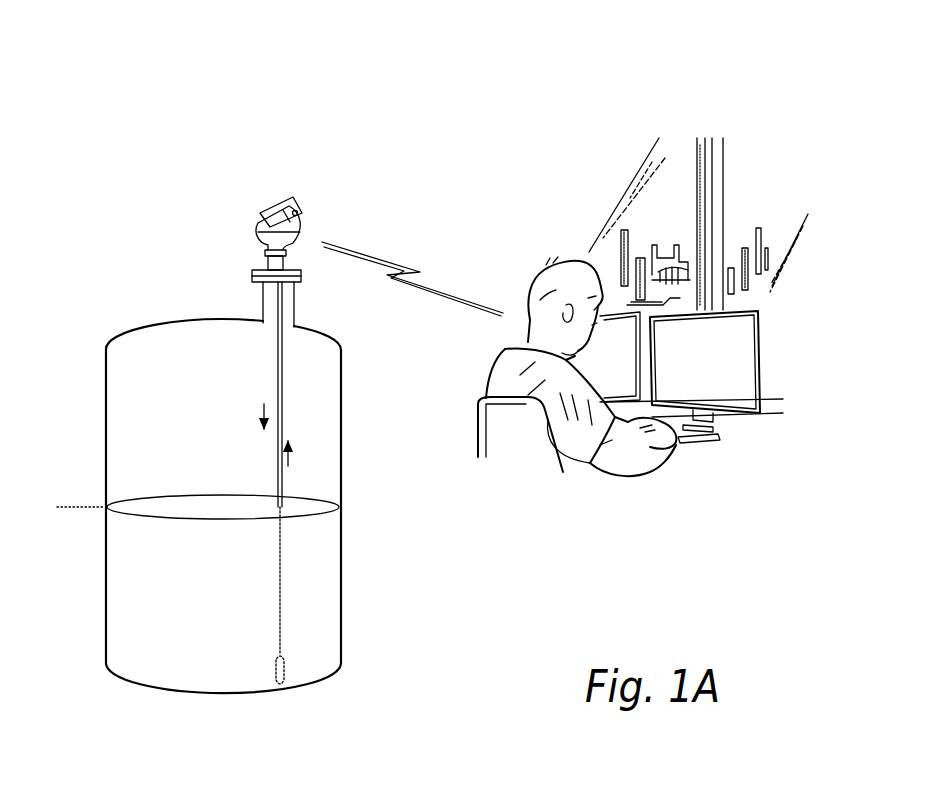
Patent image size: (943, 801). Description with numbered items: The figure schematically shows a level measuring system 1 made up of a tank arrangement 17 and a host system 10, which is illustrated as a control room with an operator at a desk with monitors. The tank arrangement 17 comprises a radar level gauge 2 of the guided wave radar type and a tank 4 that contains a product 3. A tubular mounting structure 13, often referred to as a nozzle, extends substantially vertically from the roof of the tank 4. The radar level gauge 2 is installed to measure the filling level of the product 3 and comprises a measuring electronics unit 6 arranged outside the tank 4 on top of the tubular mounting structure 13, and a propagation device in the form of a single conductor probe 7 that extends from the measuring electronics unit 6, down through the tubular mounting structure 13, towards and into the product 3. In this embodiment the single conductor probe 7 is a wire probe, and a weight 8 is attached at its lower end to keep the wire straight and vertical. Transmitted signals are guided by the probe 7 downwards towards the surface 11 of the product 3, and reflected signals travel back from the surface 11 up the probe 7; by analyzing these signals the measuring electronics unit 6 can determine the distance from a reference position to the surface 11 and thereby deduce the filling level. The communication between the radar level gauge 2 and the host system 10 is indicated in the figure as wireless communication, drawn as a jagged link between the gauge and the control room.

The level measuring system 1 is at (500, 80).
The radar level gauge 2 is at (230, 200).
The product 3 is at (201, 611).
The tank 4 is at (105, 448).
The measuring electronics unit 6 is at (274, 202).
The single conductor probe 7 is at (282, 408).
The weight 8 is at (284, 672).
The host system 10 is at (749, 189).
The surface 11 is at (190, 507).
The tubular mounting structure 13 is at (296, 298).
The tank arrangement 17 is at (353, 132).